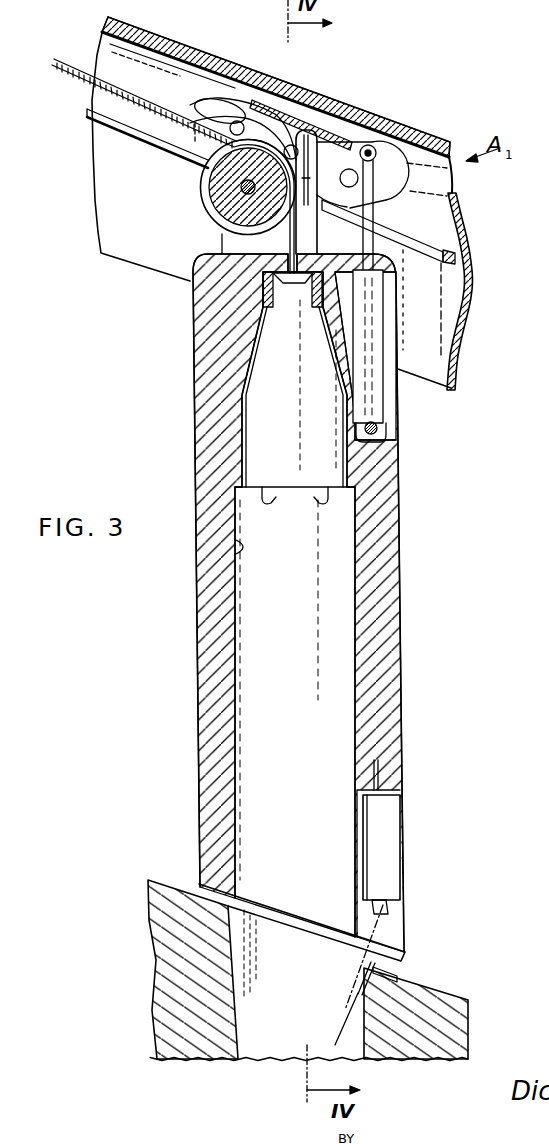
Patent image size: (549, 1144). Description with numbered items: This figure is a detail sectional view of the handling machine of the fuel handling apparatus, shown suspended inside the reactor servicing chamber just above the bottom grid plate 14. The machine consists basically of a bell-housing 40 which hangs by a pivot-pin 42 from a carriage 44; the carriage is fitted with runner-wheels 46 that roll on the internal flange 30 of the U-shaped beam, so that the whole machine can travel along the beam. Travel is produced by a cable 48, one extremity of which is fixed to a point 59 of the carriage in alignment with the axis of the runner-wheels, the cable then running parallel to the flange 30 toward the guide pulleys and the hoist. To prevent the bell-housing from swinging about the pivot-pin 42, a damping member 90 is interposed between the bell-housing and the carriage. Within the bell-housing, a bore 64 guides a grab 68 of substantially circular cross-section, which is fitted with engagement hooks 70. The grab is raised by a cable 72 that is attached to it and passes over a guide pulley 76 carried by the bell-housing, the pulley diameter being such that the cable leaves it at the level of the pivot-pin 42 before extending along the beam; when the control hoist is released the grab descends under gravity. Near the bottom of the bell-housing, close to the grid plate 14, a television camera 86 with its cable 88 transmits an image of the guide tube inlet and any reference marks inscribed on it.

The bottom grid plate 14 is at (433, 996).
The internal flange 30 is at (410, 240).
The bell-housing 40 is at (202, 627).
The pivot-pin 42 is at (303, 123).
The carriage 44 is at (342, 153).
The runner-wheel 46 is at (240, 97).
The cable 48 is at (60, 70).
The attachment point 59 is at (214, 88).
The bore 64 is at (236, 545).
The grab 68 is at (307, 432).
The engagement hooks 70 is at (323, 496).
The cable 72 is at (295, 242).
The guide pulley 76 is at (216, 182).
The television camera 86 is at (392, 845).
The cable 88 is at (197, 52).
The damping member 90 is at (380, 402).